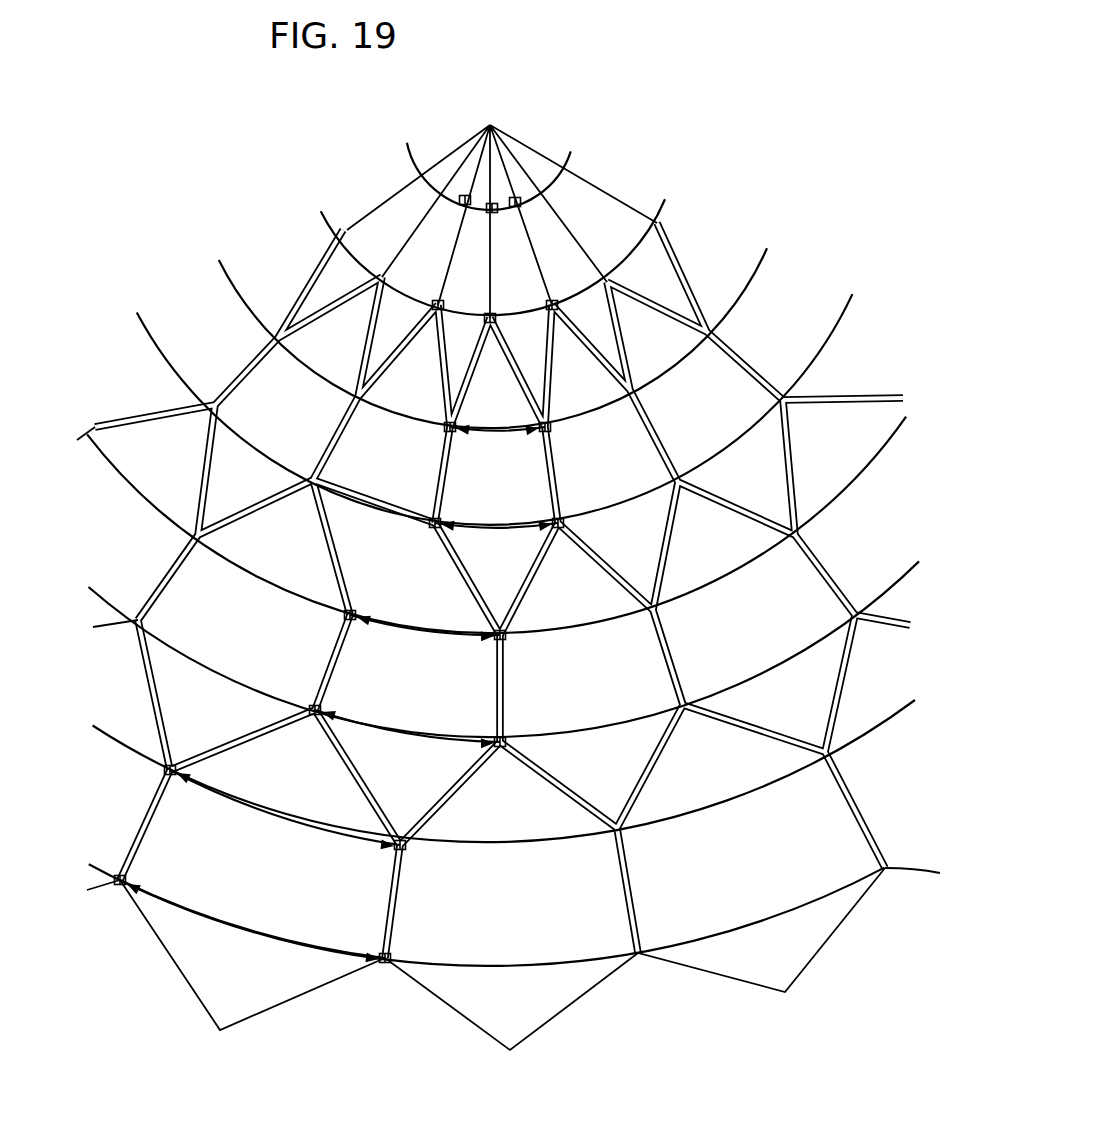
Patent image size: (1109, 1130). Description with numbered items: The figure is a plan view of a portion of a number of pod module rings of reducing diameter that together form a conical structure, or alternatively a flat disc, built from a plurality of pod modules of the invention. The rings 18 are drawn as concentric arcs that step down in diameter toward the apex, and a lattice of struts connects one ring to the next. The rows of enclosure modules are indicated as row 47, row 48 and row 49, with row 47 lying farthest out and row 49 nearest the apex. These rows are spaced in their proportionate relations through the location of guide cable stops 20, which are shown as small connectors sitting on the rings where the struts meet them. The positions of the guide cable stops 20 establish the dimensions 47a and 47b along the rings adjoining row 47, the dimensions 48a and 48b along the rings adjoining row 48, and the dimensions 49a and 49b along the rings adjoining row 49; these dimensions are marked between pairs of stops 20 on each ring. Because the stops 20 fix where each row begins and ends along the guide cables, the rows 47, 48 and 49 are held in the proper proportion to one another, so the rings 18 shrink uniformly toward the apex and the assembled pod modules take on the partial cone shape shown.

The arcuate ring members 18 is at (940, 842).
The guide cable stops 20 is at (382, 968).
The row of enclosure modules 47 is at (169, 825).
The dimension 47a is at (252, 931).
The dimension 47b is at (285, 810).
The row of enclosure modules 48 is at (349, 662).
The dimension 48a is at (407, 740).
The dimension 48b is at (425, 615).
The row of enclosure modules 49 is at (461, 475).
The dimension 49a is at (496, 543).
The dimension 49b is at (497, 413).